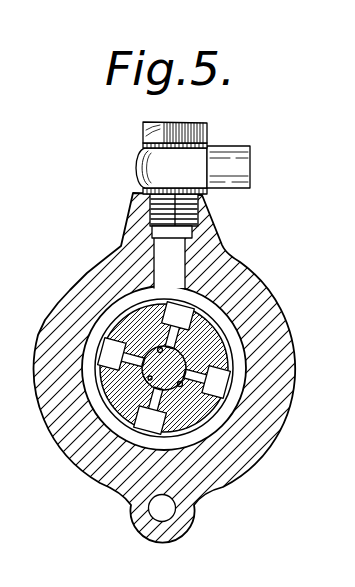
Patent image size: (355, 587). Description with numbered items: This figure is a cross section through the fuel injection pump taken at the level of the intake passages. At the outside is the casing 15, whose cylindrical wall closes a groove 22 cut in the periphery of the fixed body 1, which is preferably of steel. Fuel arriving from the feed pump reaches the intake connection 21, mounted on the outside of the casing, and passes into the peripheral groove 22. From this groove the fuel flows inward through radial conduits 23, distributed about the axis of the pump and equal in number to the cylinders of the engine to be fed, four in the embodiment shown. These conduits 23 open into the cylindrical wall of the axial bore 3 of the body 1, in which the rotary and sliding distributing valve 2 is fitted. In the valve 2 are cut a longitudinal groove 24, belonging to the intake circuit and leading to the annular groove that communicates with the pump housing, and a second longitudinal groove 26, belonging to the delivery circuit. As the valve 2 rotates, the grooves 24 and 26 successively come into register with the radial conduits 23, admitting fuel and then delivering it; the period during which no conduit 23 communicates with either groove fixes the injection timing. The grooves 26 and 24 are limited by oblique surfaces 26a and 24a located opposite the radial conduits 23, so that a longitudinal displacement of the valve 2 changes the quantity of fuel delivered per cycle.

The fixed body 1 is at (204, 332).
The rotary and sliding valve 2 is at (150, 387).
The bore 3 is at (148, 379).
The casing 15 is at (278, 385).
The intake connection 21 is at (172, 166).
The groove 22 is at (90, 352).
The radial conduits 23 is at (235, 365).
The longitudinal groove 24 is at (222, 402).
The oblique surface 24a is at (164, 368).
The second longitudinal groove 26 is at (129, 312).
The oblique surface 26a is at (164, 368).